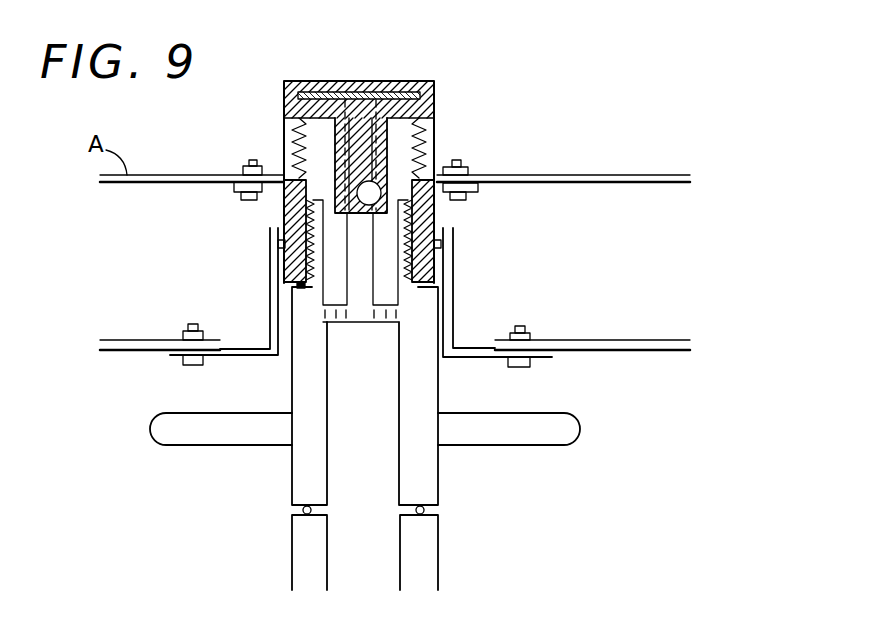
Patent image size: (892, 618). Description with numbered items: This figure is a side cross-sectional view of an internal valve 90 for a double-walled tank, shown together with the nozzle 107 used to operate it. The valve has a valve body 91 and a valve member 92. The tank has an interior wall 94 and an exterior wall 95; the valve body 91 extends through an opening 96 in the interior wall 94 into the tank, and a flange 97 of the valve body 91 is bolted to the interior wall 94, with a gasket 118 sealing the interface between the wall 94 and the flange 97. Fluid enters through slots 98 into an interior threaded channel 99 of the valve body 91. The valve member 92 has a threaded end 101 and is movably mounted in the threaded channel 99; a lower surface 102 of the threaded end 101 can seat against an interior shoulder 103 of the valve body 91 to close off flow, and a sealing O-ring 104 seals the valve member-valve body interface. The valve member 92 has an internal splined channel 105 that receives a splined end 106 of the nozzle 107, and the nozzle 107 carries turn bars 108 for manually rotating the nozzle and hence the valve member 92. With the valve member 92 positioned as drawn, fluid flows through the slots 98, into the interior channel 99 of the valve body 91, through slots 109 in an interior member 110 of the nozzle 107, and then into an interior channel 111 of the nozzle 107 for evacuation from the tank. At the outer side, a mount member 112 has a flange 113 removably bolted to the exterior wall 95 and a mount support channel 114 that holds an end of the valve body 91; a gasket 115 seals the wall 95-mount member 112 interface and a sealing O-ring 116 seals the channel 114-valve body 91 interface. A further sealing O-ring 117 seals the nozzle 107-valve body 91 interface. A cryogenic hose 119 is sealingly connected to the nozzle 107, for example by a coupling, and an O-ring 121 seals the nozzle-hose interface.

The internal valve 90 is at (292, 78).
The valve body 91 is at (285, 240).
The valve member 92 is at (378, 108).
The interior wall 94 is at (142, 192).
The exterior wall 95 is at (626, 341).
The opening 96 is at (278, 178).
The flange 97 is at (478, 188).
The slots 98 is at (292, 132).
The interior threaded channel 99 is at (470, 172).
The threaded end 101 is at (436, 100).
The lower surface 102 is at (430, 140).
The interior shoulder 103 is at (290, 215).
The sealing O-ring 104 is at (436, 208).
The internal splined channel 105 is at (378, 205).
The splined end 106 is at (357, 125).
The nozzle 107 is at (425, 466).
The turn bars 108 is at (188, 446).
The slots 109 is at (338, 330).
The interior member 110 is at (360, 326).
The interior channel 111 is at (400, 487).
The mount member 112 is at (272, 318).
The flange 113 is at (255, 352).
The mount support channel 114 is at (446, 322).
The gasket 115 is at (188, 360).
The sealing O-ring 116 is at (281, 246).
The sealing O-ring 117 is at (299, 292).
The gasket 118 is at (236, 186).
The cryogenic hose 119 is at (305, 548).
The O-ring 121 is at (292, 495).